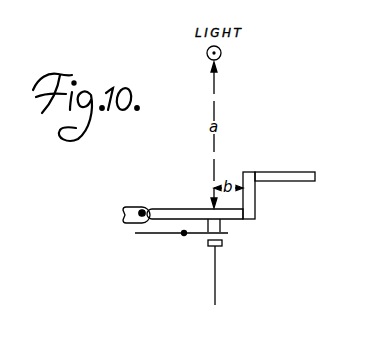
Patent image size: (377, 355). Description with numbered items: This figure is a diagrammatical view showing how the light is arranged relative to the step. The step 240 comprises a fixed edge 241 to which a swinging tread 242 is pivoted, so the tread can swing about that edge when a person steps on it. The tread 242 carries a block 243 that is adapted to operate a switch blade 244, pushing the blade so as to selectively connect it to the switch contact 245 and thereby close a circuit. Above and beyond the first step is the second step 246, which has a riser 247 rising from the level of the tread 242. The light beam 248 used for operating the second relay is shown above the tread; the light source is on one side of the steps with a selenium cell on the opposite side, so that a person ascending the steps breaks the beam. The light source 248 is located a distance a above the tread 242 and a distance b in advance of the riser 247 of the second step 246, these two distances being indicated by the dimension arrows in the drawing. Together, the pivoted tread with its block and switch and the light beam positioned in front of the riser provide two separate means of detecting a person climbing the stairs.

The step 240 is at (155, 203).
The fixed edge 241 is at (127, 221).
The swinging tread 242 is at (180, 209).
The block 243 is at (222, 227).
The switch blade 244 is at (194, 235).
The switch contact 245 is at (222, 245).
The second step 246 is at (286, 159).
The riser 247 is at (250, 201).
The light beam 248 is at (221, 54).